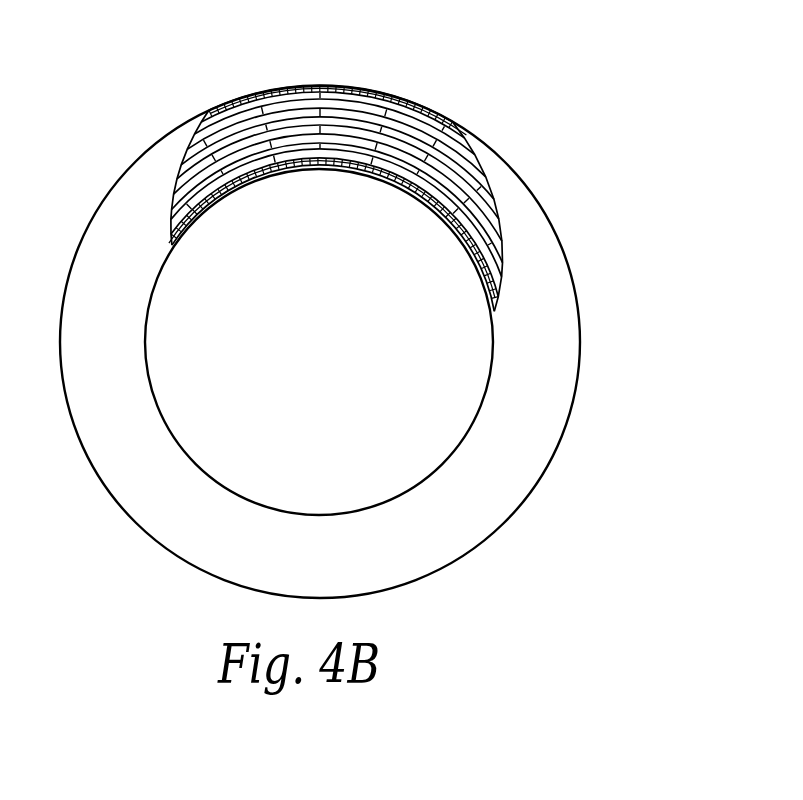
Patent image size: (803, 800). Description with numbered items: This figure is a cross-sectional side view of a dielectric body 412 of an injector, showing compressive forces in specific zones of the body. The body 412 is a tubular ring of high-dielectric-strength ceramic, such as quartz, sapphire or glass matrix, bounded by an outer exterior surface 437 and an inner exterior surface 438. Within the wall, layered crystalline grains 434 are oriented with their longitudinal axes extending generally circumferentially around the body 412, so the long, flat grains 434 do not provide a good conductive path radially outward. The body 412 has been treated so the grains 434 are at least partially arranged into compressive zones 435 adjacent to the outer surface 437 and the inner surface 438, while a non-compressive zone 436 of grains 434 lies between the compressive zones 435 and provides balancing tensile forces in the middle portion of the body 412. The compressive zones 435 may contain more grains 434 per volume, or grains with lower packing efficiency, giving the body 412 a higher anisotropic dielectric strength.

The dielectric body 412 is at (320, 380).
The crystalline grains 434 is at (180, 198).
The compressive zones 435 is at (341, 212).
The non-compressive zone 436 is at (510, 208).
The outer exterior surface 437 is at (223, 583).
The inner exterior surface 438 is at (337, 514).